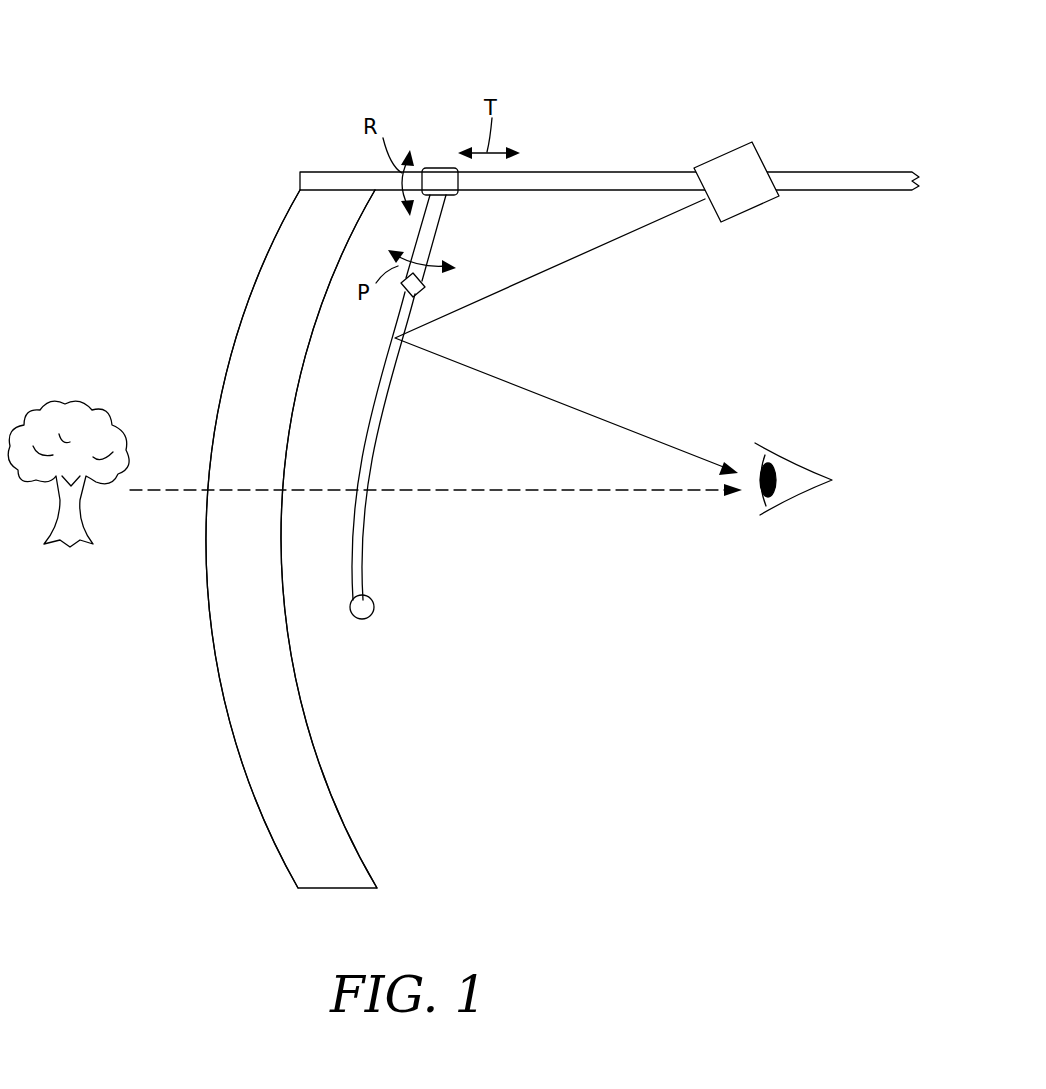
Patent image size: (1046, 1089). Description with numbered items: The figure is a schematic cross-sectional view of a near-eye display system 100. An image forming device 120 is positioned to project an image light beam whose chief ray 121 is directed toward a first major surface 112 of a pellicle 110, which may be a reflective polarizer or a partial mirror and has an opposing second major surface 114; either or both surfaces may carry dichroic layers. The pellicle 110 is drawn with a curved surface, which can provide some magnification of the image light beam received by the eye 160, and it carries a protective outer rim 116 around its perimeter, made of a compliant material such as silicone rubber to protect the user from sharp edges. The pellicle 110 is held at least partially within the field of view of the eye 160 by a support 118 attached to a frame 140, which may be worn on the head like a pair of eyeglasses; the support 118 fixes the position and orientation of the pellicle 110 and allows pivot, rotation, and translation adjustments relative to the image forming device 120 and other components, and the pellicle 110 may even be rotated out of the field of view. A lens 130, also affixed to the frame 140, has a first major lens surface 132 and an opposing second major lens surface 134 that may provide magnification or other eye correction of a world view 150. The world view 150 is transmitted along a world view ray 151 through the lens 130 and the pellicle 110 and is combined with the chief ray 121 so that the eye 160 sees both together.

The near-eye display system 100 is at (182, 54).
The pellicle 110 is at (410, 594).
The first major surface 112 is at (362, 553).
The second major surface 114 is at (352, 575).
The protective outer rim 116 is at (369, 619).
The support 118 is at (440, 176).
The image forming device 120 is at (760, 150).
The chief ray 121 is at (567, 262).
The lens 130 is at (300, 218).
The first major lens surface 132 is at (347, 832).
The second major lens surface 134 is at (262, 818).
The frame 140 is at (577, 177).
The world view 150 is at (83, 368).
The world view ray 151 is at (603, 494).
The eye 160 is at (797, 447).